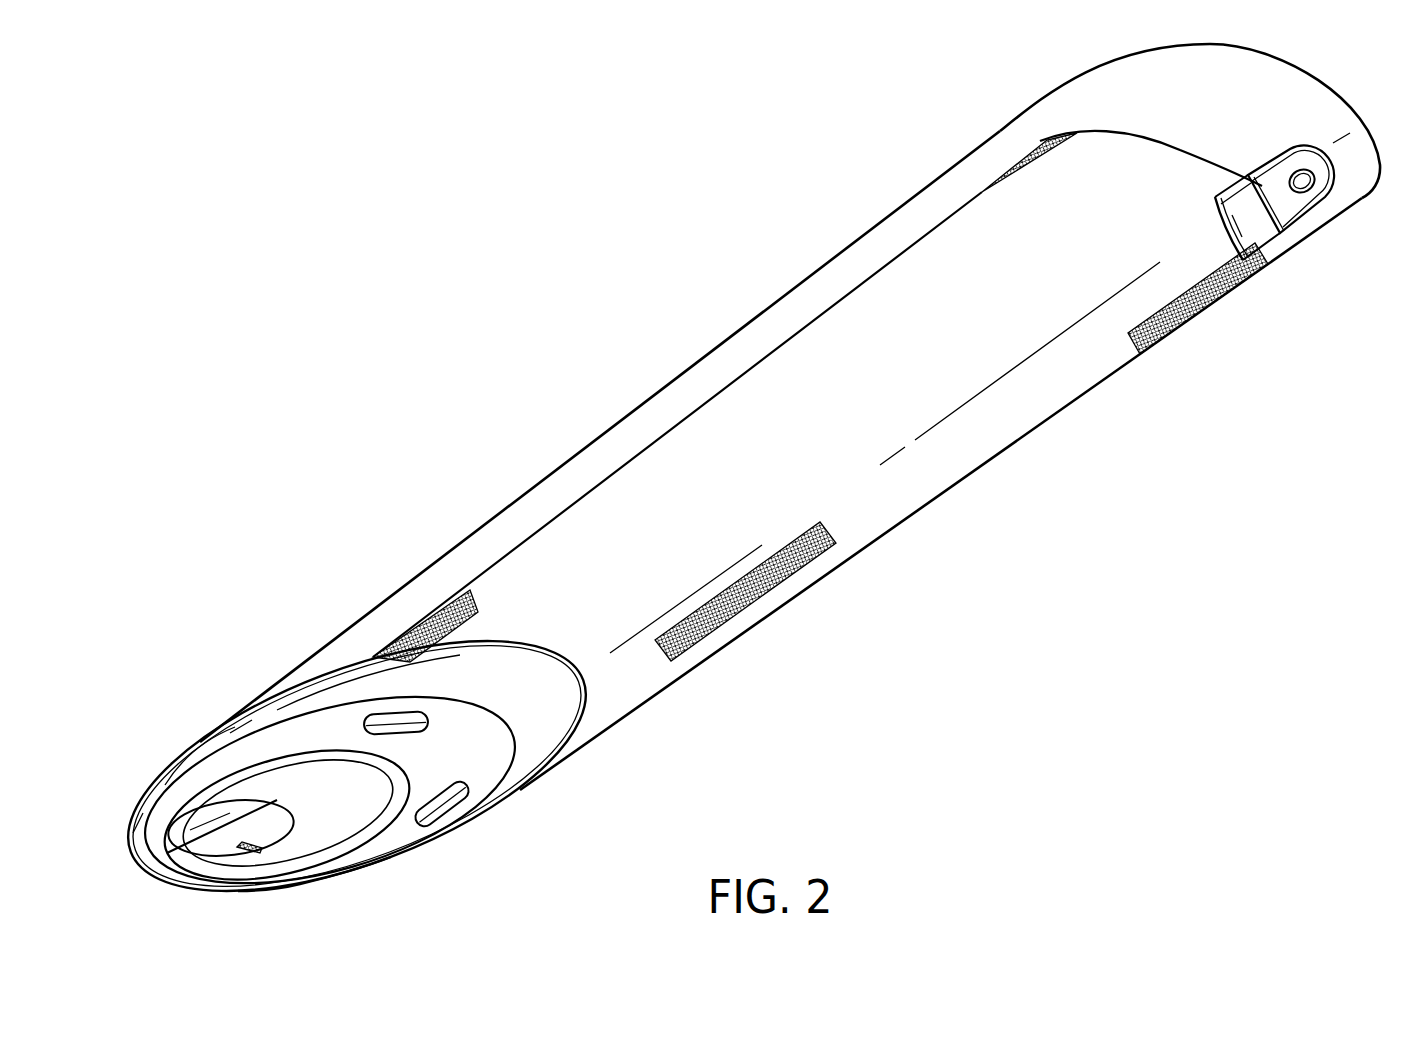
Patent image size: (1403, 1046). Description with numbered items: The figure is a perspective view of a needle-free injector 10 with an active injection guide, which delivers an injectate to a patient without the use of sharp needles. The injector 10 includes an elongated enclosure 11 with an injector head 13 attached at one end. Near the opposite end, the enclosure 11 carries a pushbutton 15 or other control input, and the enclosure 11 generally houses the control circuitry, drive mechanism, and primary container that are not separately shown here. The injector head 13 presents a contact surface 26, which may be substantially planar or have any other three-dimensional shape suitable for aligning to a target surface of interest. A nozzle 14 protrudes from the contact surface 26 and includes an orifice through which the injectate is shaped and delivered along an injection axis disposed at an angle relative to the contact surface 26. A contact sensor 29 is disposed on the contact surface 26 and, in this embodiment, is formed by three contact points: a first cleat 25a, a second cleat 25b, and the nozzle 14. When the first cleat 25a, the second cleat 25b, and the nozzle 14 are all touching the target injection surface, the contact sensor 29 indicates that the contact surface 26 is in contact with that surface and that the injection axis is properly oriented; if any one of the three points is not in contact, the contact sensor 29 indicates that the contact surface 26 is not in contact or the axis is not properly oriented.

The injector 10 is at (696, 309).
The enclosure 11 is at (605, 448).
The injector head 13 is at (537, 770).
The nozzle 14 is at (177, 866).
The pushbutton 15 is at (1300, 200).
The first cleat 25a is at (413, 717).
The second cleat 25b is at (447, 812).
The contact surface 26 is at (378, 800).
The contact sensor 29 is at (372, 900).